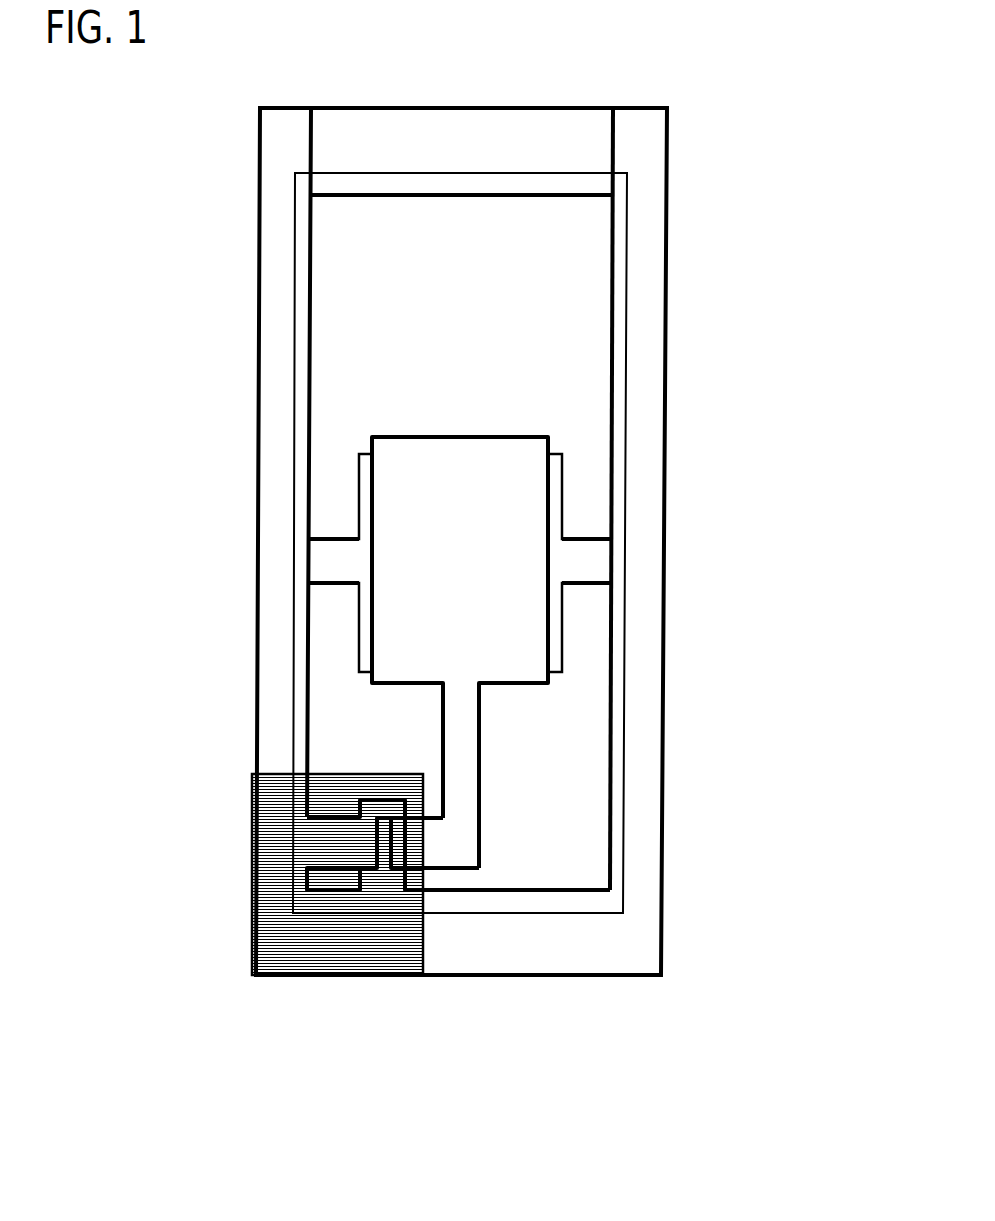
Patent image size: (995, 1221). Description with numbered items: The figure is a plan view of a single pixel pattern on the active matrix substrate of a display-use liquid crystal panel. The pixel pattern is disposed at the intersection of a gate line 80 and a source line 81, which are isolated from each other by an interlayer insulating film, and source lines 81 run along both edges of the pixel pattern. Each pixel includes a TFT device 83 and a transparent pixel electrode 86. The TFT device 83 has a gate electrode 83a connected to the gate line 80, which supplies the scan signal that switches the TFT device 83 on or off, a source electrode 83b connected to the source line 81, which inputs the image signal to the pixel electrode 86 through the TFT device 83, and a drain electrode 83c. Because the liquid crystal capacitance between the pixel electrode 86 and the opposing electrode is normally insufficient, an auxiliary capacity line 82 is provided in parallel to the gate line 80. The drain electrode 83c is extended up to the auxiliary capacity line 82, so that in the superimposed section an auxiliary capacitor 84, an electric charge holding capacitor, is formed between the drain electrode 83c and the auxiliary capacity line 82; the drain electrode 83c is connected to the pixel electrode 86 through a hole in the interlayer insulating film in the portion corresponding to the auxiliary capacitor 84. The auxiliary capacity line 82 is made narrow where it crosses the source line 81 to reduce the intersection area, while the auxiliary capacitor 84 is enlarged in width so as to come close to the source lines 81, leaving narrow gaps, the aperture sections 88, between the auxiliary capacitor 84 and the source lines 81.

The gate line 80 is at (566, 947).
The source line 81 is at (252, 437).
The auxiliary capacity line 82 is at (613, 565).
The transparent pixel electrode 86 is at (630, 263).
The auxiliary capacitor 84 is at (503, 498).
The aperture sections 88 is at (333, 503).
The TFT device 83 is at (348, 790).
The gate electrode 83a is at (378, 895).
The source electrode 83b is at (332, 843).
The drain electrode 83c is at (487, 740).